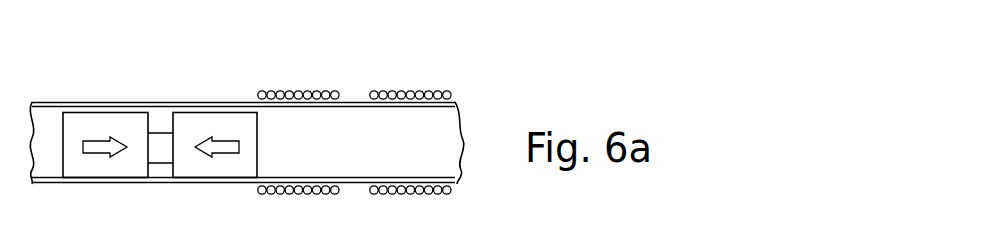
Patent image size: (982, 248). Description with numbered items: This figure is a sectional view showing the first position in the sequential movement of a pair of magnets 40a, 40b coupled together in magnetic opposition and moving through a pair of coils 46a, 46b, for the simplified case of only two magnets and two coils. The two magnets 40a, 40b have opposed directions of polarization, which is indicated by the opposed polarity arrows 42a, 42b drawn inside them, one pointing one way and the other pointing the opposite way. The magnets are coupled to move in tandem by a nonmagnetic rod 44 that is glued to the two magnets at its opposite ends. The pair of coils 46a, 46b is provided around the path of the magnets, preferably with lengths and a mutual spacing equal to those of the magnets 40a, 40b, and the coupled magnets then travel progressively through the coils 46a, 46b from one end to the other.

The magnet 40a is at (105, 113).
The magnet 40b is at (192, 113).
The nonmagnetic rod 44 is at (162, 133).
The polarity arrow 42a is at (102, 153).
The polarity arrow 42b is at (223, 153).
The coil 46a is at (315, 91).
The coil 46b is at (403, 91).